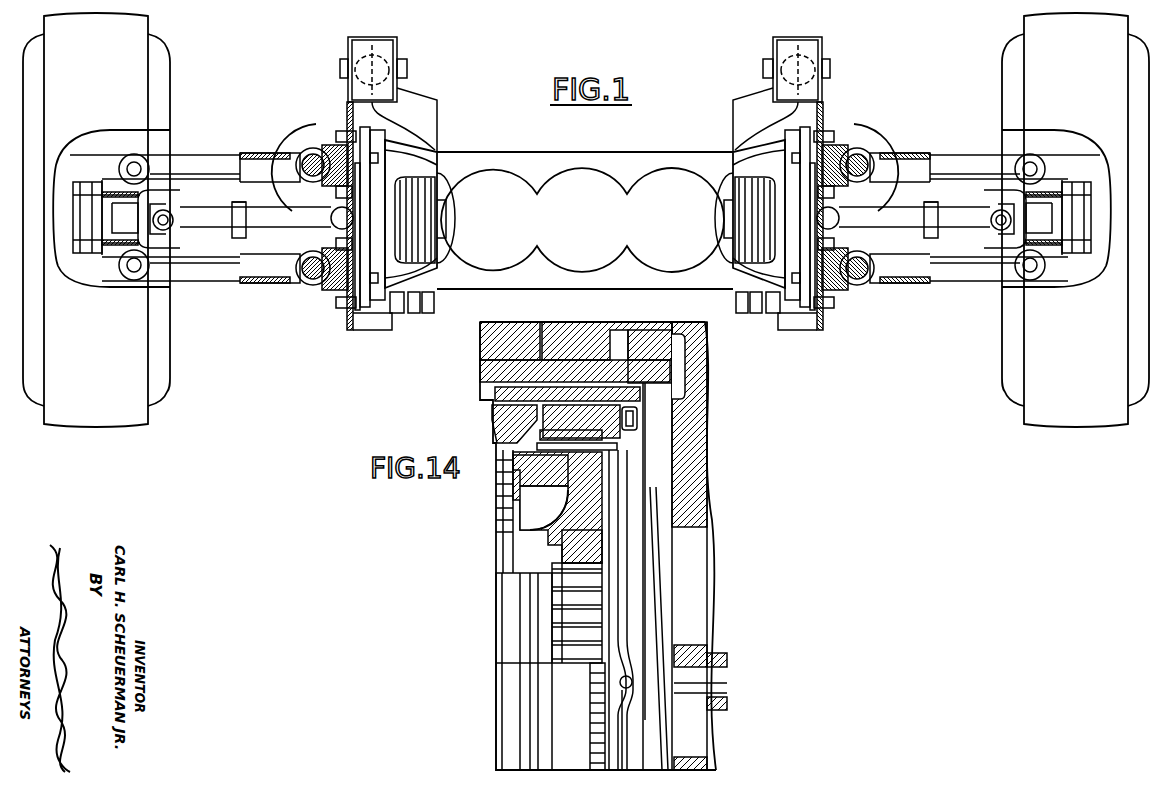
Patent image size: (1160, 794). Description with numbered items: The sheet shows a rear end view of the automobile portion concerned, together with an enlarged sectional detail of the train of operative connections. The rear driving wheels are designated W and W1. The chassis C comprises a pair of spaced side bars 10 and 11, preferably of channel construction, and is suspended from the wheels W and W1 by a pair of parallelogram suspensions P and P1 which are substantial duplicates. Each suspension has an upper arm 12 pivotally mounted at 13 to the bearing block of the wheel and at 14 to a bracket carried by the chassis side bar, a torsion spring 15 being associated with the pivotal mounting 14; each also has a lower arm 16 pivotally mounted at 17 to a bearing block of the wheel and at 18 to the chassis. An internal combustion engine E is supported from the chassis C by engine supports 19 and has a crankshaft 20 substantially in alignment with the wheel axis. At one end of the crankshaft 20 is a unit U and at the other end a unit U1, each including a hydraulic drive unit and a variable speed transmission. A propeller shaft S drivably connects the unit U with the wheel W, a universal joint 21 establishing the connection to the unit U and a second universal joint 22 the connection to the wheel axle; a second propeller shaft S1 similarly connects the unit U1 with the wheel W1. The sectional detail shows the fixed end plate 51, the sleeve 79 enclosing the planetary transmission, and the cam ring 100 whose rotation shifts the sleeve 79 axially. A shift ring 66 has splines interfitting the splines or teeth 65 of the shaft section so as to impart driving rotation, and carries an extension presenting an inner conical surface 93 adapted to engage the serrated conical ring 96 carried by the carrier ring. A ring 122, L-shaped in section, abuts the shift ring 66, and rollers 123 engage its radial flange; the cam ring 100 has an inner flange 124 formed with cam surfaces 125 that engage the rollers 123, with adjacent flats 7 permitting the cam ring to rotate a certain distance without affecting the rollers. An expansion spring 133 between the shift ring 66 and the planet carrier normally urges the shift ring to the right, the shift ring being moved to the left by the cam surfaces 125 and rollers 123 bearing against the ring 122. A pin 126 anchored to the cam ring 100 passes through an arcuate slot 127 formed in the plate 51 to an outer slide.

In FIG. 1, the rear wheel W is at (115, 428).
In FIG. 1, the rear wheel W1 is at (1085, 428).
In FIG. 1, the pivotal mounting 13 is at (137, 165).
In FIG. 1, the pivotal mounting 17 is at (134, 270).
In FIG. 1, the upper arm 12 is at (200, 160).
In FIG. 1, the lower arm 16 is at (212, 285).
In FIG. 1, the pivotal mounting 14 is at (310, 160).
In FIG. 1, the pivotal mounting 18 is at (316, 280).
In FIG. 1, the torsion spring 15 is at (300, 133).
In FIG. 1, the universal joint 22 is at (167, 215).
In FIG. 1, the universal joint 21 is at (330, 217).
In FIG. 1, the side bar 10 is at (348, 326).
In FIG. 1, the side bar 11 is at (826, 324).
In FIG. 1, the chassis C is at (412, 77).
In FIG. 1, the engine support 19 is at (436, 106).
In FIG. 1, the crankshaft 20 is at (453, 220).
In FIG. 1, the unit U is at (416, 316).
In FIG. 1, the unit U1 is at (765, 316).
In FIG. 1, the internal combustion engine E is at (668, 160).
In FIG. 1, the parallelogram suspension P is at (252, 145).
In FIG. 1, the parallelogram suspension P1 is at (958, 152).
In FIG. 1, the propeller shaft S is at (227, 209).
In FIG. 1, the propeller shaft S1 is at (954, 214).
In FIG. 14, the sleeve 79 is at (495, 372).
In FIG. 14, the fixed end plate 51 is at (700, 492).
In FIG. 14, the conical surface 93 is at (510, 455).
In FIG. 14, the cam ring 100 is at (672, 431).
In FIG. 14, the conical ring 96 is at (522, 470).
In FIG. 14, the expansion spring 133 is at (515, 505).
In FIG. 14, the shift ring 66 is at (595, 545).
In FIG. 14, the inner flange 124 is at (637, 480).
In FIG. 14, the ring 122 is at (612, 520).
In FIG. 14, the cam surface 125 is at (620, 644).
In FIG. 14, the roller 123 is at (620, 682).
In FIG. 14, the flat 7 is at (622, 728).
In FIG. 14, the splines 65 is at (578, 645).
In FIG. 14, the pin 126 is at (714, 684).
In FIG. 14, the arcuate slot 127 is at (695, 742).